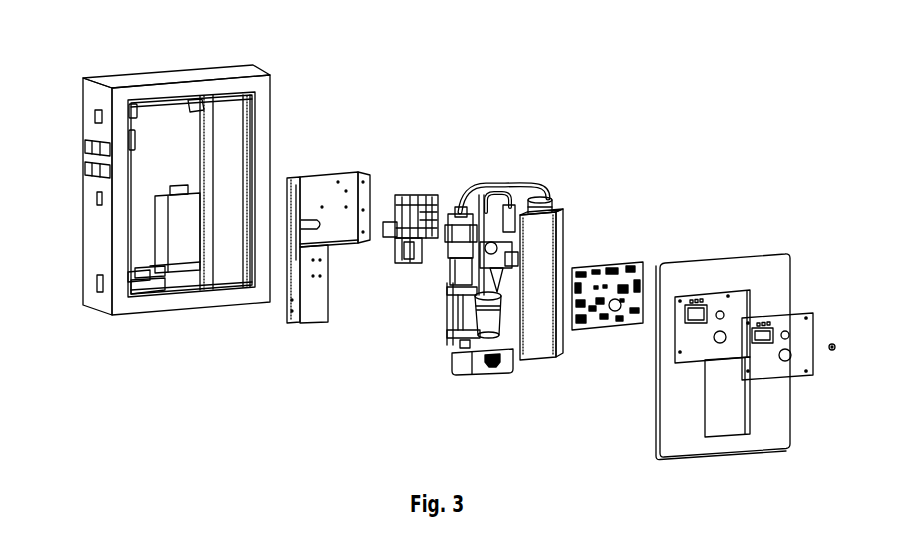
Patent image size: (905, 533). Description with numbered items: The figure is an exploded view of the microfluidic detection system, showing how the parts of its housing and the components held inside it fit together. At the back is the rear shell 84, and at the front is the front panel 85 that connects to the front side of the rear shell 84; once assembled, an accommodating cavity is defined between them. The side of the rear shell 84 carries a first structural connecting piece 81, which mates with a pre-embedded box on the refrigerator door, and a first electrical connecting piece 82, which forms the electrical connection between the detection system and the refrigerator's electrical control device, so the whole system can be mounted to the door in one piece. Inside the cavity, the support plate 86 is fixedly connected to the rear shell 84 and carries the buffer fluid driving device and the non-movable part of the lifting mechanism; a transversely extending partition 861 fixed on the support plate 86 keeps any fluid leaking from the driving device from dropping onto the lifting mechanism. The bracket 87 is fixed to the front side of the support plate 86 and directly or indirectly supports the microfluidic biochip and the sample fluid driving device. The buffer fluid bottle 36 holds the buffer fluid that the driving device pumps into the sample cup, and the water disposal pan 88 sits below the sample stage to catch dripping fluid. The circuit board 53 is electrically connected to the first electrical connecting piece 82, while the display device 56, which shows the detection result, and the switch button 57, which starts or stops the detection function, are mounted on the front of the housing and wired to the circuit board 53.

The rear shell 84 is at (183, 61).
The first structural connecting piece 81 is at (93, 112).
The first electrical connecting piece 82 is at (86, 146).
The support plate 86 is at (336, 171).
The partition 861 is at (319, 226).
The bracket 87 is at (418, 194).
The buffer fluid bottle 36 is at (538, 330).
The water disposal pan 88 is at (478, 372).
The circuit board 53 is at (615, 261).
The front panel 85 is at (730, 270).
The display device 56 is at (812, 316).
The switch button 57 is at (832, 354).